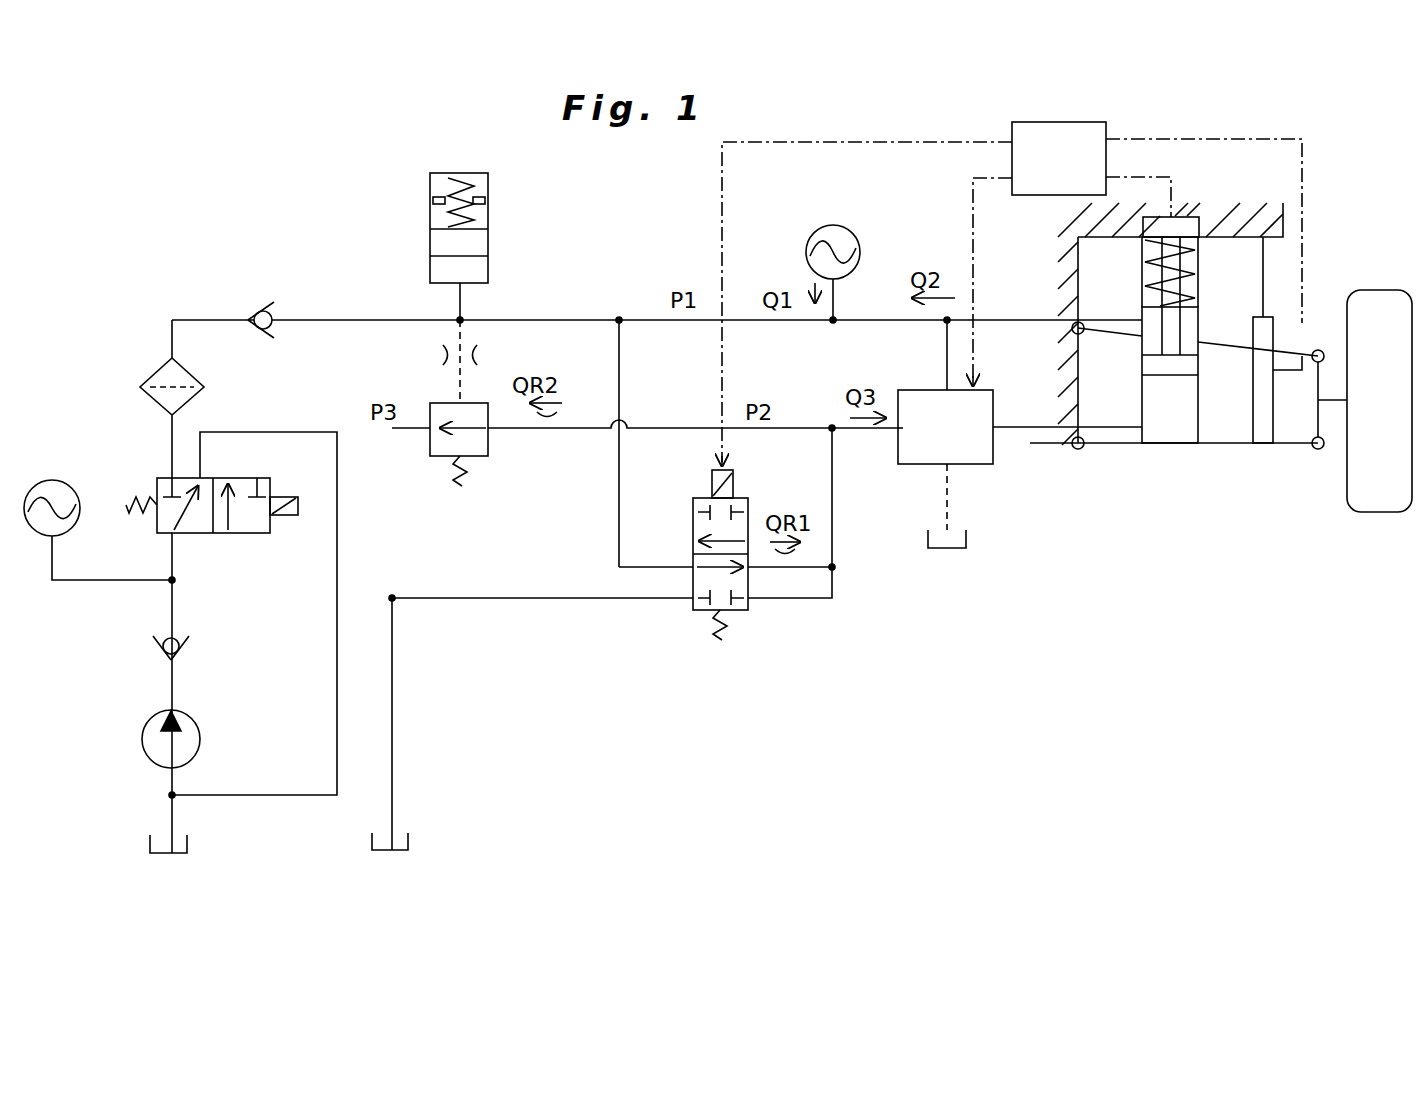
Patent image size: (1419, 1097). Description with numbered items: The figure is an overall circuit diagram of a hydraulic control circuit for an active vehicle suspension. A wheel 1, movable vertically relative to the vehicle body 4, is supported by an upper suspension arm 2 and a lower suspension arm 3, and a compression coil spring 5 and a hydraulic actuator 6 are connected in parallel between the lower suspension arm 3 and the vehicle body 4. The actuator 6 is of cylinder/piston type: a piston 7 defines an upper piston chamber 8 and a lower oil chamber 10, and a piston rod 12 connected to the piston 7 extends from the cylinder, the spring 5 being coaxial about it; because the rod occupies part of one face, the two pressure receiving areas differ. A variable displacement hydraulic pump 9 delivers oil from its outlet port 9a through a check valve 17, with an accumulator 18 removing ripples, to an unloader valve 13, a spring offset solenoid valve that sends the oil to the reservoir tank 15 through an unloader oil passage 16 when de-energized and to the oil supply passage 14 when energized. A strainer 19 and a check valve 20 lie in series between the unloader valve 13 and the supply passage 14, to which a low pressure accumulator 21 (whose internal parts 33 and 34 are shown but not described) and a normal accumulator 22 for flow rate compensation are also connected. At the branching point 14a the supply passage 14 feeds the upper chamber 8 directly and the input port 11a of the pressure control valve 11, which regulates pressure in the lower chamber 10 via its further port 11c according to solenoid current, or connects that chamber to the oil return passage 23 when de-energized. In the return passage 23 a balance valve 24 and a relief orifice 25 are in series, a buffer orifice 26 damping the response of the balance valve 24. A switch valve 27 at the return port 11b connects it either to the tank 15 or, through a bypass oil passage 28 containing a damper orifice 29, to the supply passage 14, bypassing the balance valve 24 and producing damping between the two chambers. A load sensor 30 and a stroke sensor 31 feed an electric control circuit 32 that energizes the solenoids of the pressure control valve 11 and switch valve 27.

The wheel 1 is at (1381, 290).
The upper suspension arm 2 is at (1283, 352).
The lower suspension arm 3 is at (1296, 450).
The vehicle body 4 is at (1283, 212).
The compression coil spring 5 is at (1188, 277).
The hydraulic actuator 6 is at (1204, 418).
The piston 7 is at (1192, 365).
The upper piston chamber 8 is at (1192, 322).
The variable displacement hydraulic pump 9 is at (193, 724).
The outlet port 9a is at (172, 712).
The lower oil chamber 10 is at (1187, 428).
The pressure control valve 11 is at (998, 434).
The input port 11a is at (945, 388).
The return port 11b is at (896, 432).
The PCV outlet port 11c is at (996, 424).
The piston rod 12 is at (1162, 282).
The unloader valve 13 is at (245, 535).
The oil supply passage 14 is at (620, 318).
The branching point 14a is at (950, 320).
The reservoir tank 15 is at (187, 843).
The unloader oil passage 16 is at (337, 662).
The check valve 17 is at (160, 650).
The accumulator 18 is at (60, 480).
The strainer 19 is at (155, 373).
The check valve 20 is at (260, 334).
The low pressure accumulator 21 is at (463, 240).
The normal accumulator 22 is at (856, 238).
The oil return passage 23 is at (672, 428).
The balance valve 24 is at (482, 460).
The relief orifice 25 is at (548, 446).
The buffer orifice 26 is at (445, 355).
The switch valve 27 is at (745, 612).
The bypass oil passage 28 is at (618, 533).
The damper orifice 29 is at (790, 600).
The load sensor 30 is at (1188, 226).
The stroke sensor 31 is at (1262, 447).
The electric control circuit 32 is at (1080, 121).
The accumulator piston 33 is at (434, 240).
The accumulator spring 34 is at (465, 192).